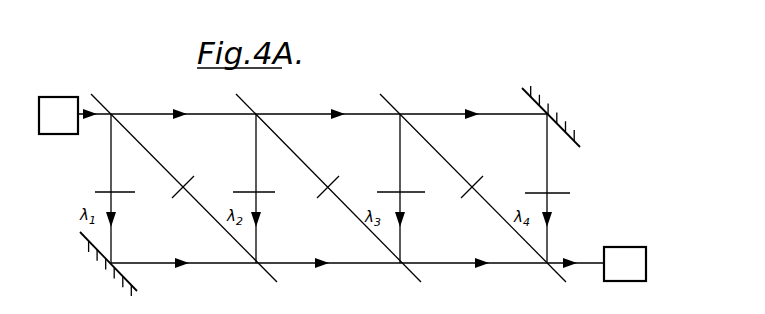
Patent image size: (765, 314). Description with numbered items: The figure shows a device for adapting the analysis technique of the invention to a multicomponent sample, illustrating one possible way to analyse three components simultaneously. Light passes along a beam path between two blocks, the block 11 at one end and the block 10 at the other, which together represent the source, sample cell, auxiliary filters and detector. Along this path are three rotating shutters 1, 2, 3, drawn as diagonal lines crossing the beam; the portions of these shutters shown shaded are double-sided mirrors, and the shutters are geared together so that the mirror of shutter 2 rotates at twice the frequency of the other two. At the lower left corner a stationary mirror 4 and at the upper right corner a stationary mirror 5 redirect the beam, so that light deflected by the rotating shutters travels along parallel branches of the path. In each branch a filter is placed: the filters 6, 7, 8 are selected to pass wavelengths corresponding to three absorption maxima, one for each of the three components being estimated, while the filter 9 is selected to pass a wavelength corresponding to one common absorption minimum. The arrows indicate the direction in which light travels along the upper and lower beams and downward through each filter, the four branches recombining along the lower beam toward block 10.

The rotating shutter 1 is at (160, 163).
The rotating shutter 2 is at (302, 162).
The rotating shutter 3 is at (443, 163).
The stationary mirror 4 is at (92, 266).
The stationary mirror 5 is at (553, 115).
The filter 6 is at (95, 192).
The filter 7 is at (266, 193).
The filter 8 is at (413, 193).
The filter 9 is at (566, 193).
The source, sample cell, auxiliary filters and detector 10 is at (622, 251).
The source, sample cell, auxiliary filters and detector 11 is at (56, 99).